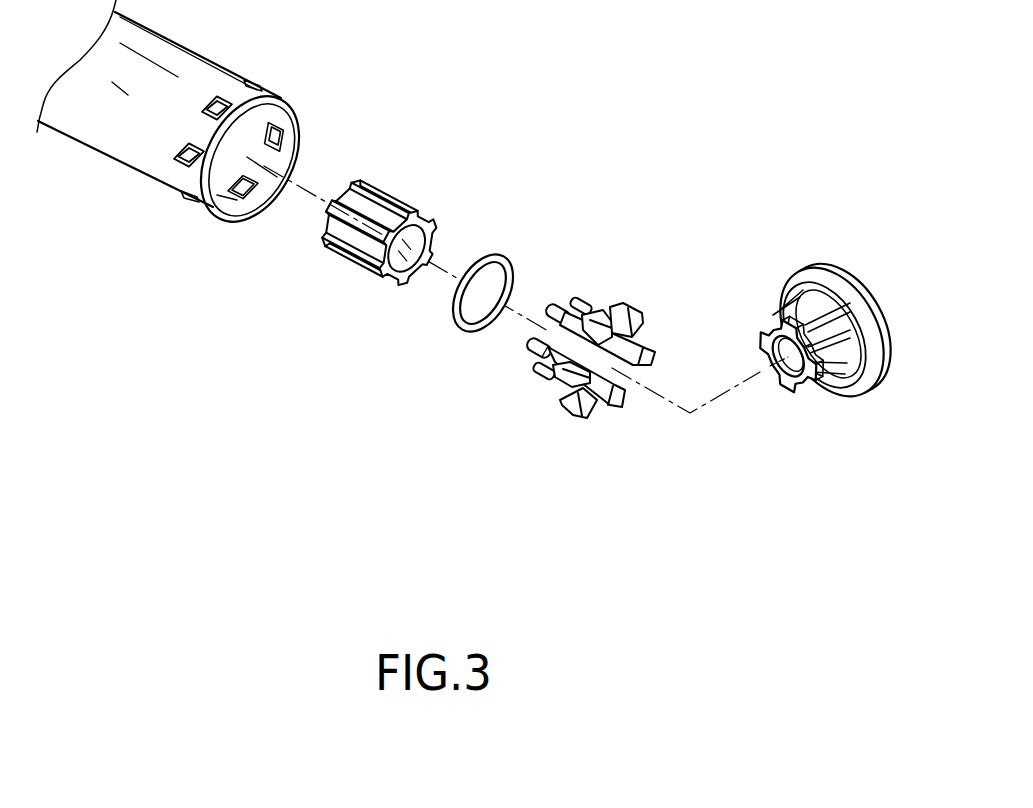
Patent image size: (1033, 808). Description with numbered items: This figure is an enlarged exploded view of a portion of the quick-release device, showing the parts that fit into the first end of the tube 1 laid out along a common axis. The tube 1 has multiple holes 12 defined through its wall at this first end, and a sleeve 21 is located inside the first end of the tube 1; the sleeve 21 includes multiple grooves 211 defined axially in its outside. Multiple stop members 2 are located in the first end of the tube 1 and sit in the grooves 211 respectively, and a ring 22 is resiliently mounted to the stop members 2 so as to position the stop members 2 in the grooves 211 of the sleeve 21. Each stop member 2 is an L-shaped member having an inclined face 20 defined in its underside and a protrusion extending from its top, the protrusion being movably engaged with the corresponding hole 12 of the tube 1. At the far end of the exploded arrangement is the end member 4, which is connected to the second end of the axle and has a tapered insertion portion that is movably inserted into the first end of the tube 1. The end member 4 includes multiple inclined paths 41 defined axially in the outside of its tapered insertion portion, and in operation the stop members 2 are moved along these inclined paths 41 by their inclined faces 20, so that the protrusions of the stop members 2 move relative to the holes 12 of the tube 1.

The tube 1 is at (178, 139).
The hole 12 is at (180, 143).
The sleeve 21 is at (308, 274).
The groove 211 is at (335, 222).
The ring 22 is at (466, 326).
The stop member 2 is at (612, 421).
The inclined face 20 is at (610, 372).
The end member 4 is at (807, 376).
The inclined path 41 is at (793, 312).